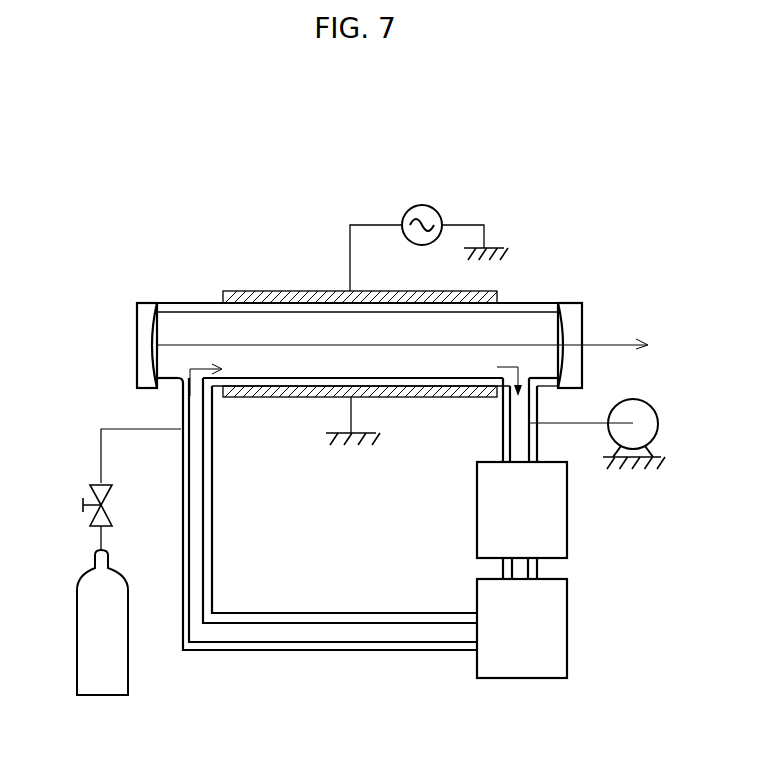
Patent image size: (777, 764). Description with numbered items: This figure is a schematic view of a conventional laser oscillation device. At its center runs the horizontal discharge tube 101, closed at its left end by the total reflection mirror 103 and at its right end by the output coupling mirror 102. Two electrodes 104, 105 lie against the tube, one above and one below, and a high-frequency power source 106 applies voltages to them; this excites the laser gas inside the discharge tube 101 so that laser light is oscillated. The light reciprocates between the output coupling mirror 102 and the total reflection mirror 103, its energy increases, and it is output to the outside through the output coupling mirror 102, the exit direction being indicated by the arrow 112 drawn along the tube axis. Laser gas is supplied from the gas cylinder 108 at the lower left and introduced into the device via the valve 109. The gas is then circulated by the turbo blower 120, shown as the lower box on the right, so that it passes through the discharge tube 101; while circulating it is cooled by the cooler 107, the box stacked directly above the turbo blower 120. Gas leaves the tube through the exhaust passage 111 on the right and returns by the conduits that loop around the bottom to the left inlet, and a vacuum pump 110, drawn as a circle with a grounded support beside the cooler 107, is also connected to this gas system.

The discharge tube 101 is at (195, 304).
The output coupling mirror 102 is at (568, 303).
The total reflection mirror 103 is at (152, 303).
The electrode 104 is at (262, 401).
The electrode 105 is at (275, 291).
The high-frequency power source 106 is at (429, 229).
The cooler 107 is at (569, 518).
The gas cylinder 108 is at (118, 698).
The valve 109 is at (80, 502).
The vacuum pump 110 is at (618, 404).
The exhaust passage 111 is at (507, 345).
The flow direction arrow 112 is at (608, 342).
The turbo blower 120 is at (539, 680).